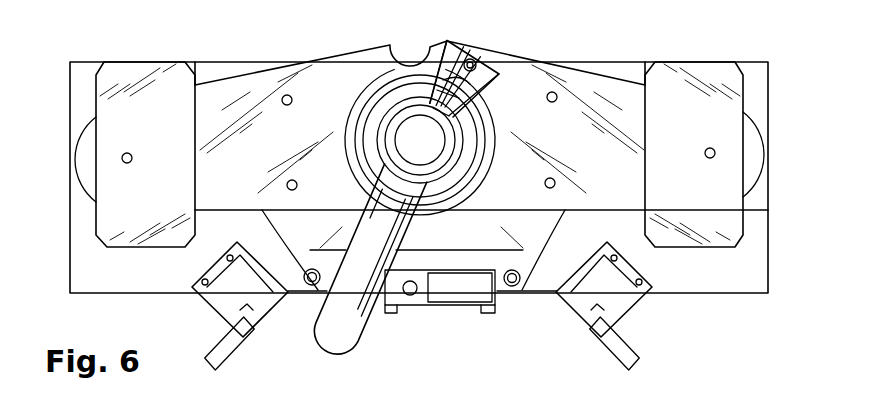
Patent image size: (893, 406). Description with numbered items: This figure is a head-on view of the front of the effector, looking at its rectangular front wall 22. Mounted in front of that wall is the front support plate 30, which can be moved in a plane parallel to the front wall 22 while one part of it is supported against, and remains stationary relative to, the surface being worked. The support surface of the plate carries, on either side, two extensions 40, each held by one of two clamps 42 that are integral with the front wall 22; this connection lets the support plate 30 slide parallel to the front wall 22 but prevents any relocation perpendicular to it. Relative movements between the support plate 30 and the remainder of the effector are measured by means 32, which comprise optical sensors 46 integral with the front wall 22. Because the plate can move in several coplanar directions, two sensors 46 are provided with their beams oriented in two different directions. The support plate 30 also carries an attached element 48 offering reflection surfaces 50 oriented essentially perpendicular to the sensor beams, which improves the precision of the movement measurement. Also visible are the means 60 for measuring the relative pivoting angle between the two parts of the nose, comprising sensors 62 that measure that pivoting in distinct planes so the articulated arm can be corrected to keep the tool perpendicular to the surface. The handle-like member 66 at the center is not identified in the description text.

The front wall 22 is at (753, 70).
The front support plate 30 is at (338, 72).
The means for measuring relative movements 32 is at (207, 317).
The extensions 40 is at (223, 103).
The clamps 42 is at (113, 223).
The sensor 46 is at (282, 305).
The attached element 48 is at (525, 283).
The reflection surfaces 50 is at (270, 233).
The means for measuring the relative pivoting angle 60 is at (483, 48).
The sensor 62 is at (432, 72).
The handle 66 is at (370, 285).